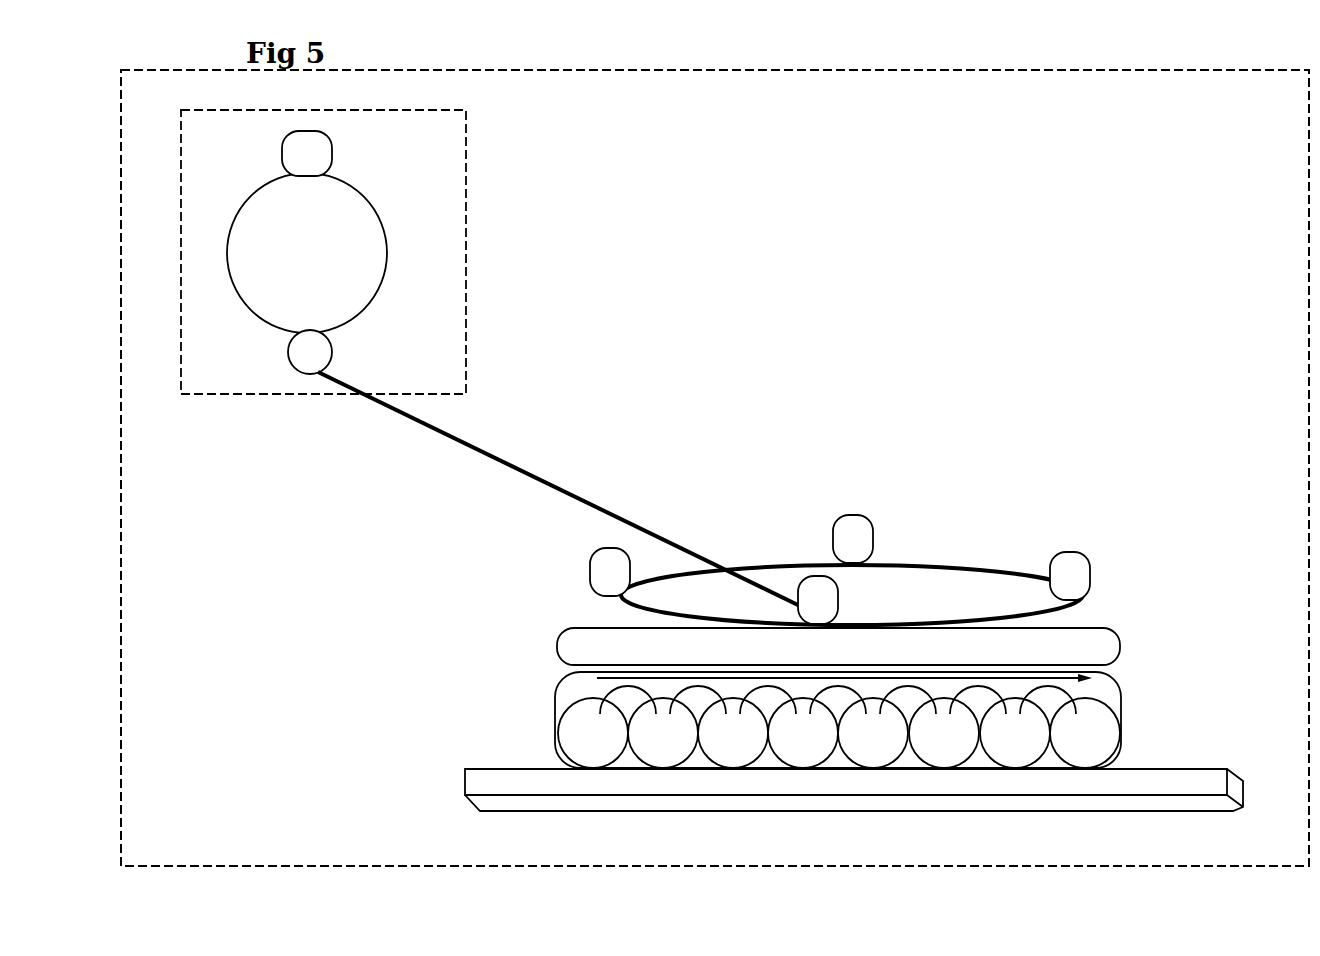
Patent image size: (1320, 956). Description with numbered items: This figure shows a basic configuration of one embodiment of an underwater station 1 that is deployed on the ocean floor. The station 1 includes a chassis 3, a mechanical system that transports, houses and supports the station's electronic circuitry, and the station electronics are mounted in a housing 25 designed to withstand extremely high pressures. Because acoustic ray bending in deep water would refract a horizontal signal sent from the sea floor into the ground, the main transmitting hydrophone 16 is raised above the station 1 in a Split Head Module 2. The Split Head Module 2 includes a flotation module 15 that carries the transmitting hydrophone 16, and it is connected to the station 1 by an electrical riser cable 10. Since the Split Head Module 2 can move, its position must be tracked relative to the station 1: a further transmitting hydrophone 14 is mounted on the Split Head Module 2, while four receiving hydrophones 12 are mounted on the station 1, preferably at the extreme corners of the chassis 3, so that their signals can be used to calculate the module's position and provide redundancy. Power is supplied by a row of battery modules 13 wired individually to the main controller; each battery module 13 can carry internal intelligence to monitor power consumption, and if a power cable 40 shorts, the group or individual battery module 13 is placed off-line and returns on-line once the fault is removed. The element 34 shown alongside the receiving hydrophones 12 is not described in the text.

The station 1 is at (122, 729).
The Split Head Module 2 is at (466, 317).
The chassis 3 is at (1185, 760).
The electrical riser cable 10 is at (559, 489).
The receiving hydrophones 12 is at (840, 569).
The battery modules 13 is at (804, 733).
The transmitting hydrophone 14 is at (310, 352).
The flotation module 15 is at (307, 253).
The transmitting hydrophone 16 is at (307, 153).
The housing 25 is at (1085, 733).
The roller belt 34 is at (852, 584).
The power cable 40 is at (844, 694).